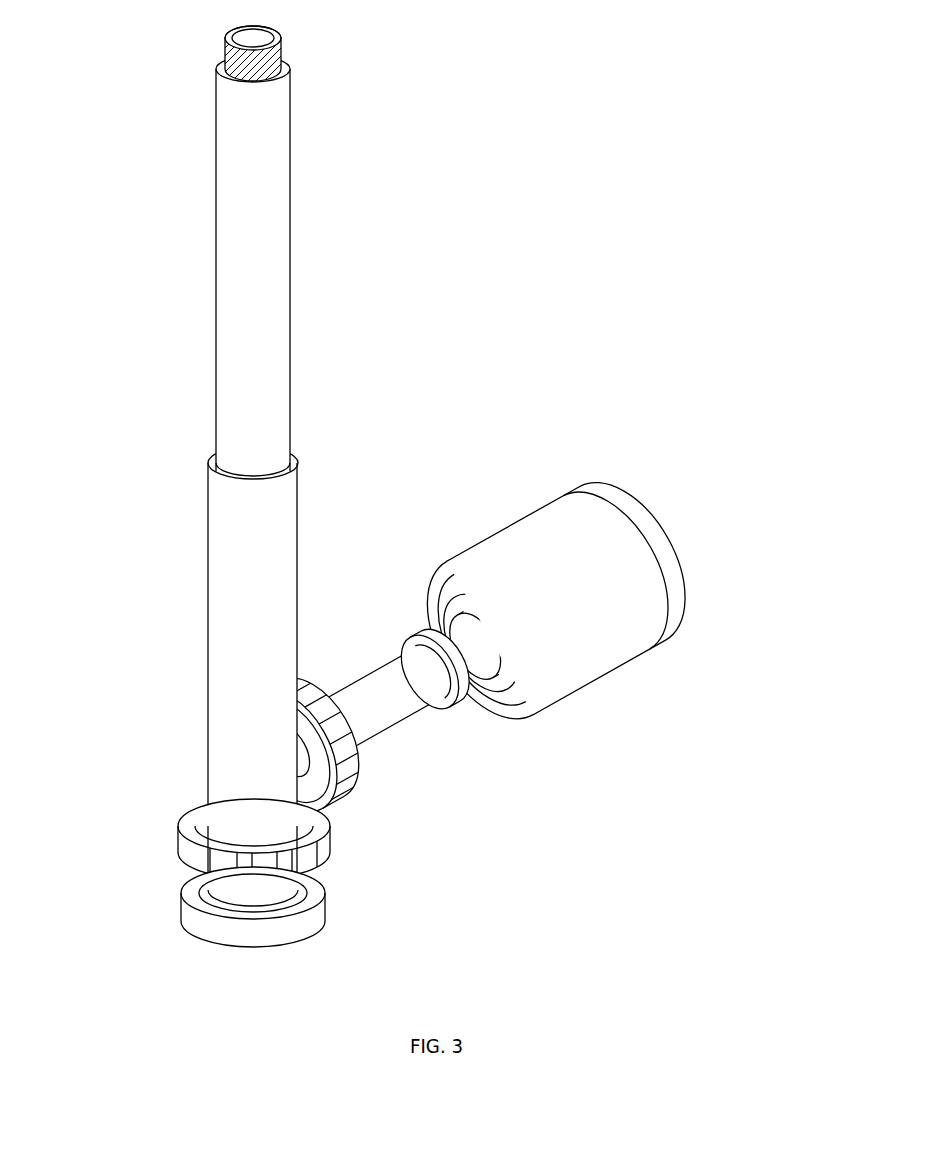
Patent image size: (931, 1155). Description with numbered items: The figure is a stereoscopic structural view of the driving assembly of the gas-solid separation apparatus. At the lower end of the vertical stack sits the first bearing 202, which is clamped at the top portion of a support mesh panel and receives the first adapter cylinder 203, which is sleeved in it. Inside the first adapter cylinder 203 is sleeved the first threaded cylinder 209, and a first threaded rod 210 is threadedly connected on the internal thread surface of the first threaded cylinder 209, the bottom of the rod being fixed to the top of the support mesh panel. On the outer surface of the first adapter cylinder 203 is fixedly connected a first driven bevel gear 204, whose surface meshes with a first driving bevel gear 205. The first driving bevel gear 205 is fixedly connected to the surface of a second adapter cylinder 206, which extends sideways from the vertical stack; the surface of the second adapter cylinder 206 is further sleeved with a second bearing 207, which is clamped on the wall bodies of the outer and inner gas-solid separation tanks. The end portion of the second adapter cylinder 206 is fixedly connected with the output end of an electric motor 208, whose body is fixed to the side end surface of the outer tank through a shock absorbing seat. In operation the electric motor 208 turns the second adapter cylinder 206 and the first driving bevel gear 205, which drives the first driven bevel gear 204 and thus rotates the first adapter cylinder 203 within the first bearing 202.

The first bearing 202 is at (257, 935).
The first adapter cylinder 203 is at (255, 533).
The first driven bevel gear 204 is at (188, 833).
The first driving bevel gear 205 is at (345, 792).
The second adapter cylinder 206 is at (395, 693).
The second bearing 207 is at (455, 655).
The electric motor 208 is at (567, 673).
The first threaded cylinder 209 is at (248, 348).
The first threaded rod 210 is at (257, 67).